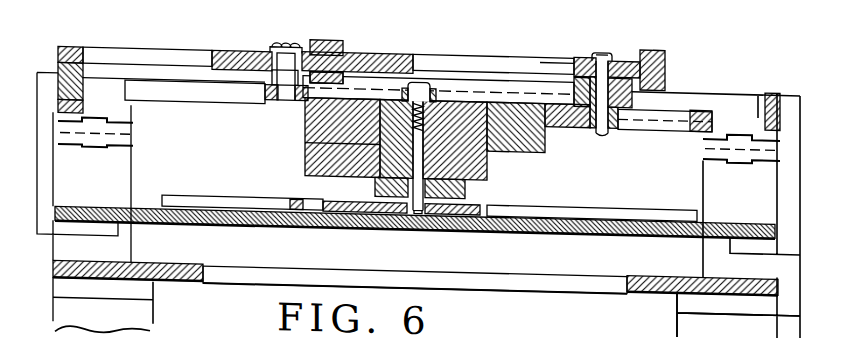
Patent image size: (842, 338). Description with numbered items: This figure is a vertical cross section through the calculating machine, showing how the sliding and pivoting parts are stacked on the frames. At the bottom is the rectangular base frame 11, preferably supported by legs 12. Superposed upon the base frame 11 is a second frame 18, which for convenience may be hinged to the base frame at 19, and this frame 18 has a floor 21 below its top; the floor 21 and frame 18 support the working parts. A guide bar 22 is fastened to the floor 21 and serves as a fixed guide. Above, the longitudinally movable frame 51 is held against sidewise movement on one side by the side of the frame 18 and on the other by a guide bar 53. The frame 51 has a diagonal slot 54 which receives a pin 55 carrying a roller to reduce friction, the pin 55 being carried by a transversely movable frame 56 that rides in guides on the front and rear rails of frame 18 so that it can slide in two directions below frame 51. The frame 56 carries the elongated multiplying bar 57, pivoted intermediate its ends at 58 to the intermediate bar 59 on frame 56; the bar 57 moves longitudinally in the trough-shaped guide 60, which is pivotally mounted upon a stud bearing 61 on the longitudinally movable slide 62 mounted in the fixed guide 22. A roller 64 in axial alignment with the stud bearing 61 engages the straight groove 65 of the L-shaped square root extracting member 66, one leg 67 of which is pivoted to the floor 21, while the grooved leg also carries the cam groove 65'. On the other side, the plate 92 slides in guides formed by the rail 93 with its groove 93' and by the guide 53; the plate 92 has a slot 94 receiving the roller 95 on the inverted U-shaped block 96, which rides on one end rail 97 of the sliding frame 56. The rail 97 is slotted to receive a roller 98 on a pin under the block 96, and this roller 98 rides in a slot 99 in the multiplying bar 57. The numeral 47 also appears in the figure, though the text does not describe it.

The base frame 11 is at (640, 279).
The legs 12 is at (693, 313).
The second frame 18 is at (60, 76).
The hinge 19 is at (138, 129).
The floor 21 is at (677, 208).
The guide bar 22 is at (488, 211).
The frame 47 is at (226, 336).
The longitudinally movable frame 51 is at (248, 44).
The guide bar 53 is at (323, 32).
The diagonal slot 54 is at (277, 40).
The pin 55 is at (283, 36).
The transversely movable frame 56 is at (270, 96).
The multiplying bar 57 is at (548, 94).
The pivot 58 is at (415, 78).
The intermediate bar 59 is at (447, 109).
The trough-shaped guide 60 is at (512, 55).
The stud bearing 61 is at (468, 128).
The longitudinally movable slide 62 is at (465, 173).
The roller 64 is at (428, 216).
The straight slot or groove 65 is at (404, 236).
The cam groove 65' is at (242, 183).
The square root extracting member 66 is at (273, 205).
The leg 67 is at (640, 196).
The plate 92 is at (370, 46).
The rail 93 is at (685, 26).
The groove 93' is at (678, 71).
The slot 94 is at (540, 50).
The roller 95 is at (600, 40).
The inverted U-shaped block 96 is at (618, 48).
The end rail 97 is at (618, 94).
The roller 98 is at (595, 118).
The slot 99 is at (657, 104).